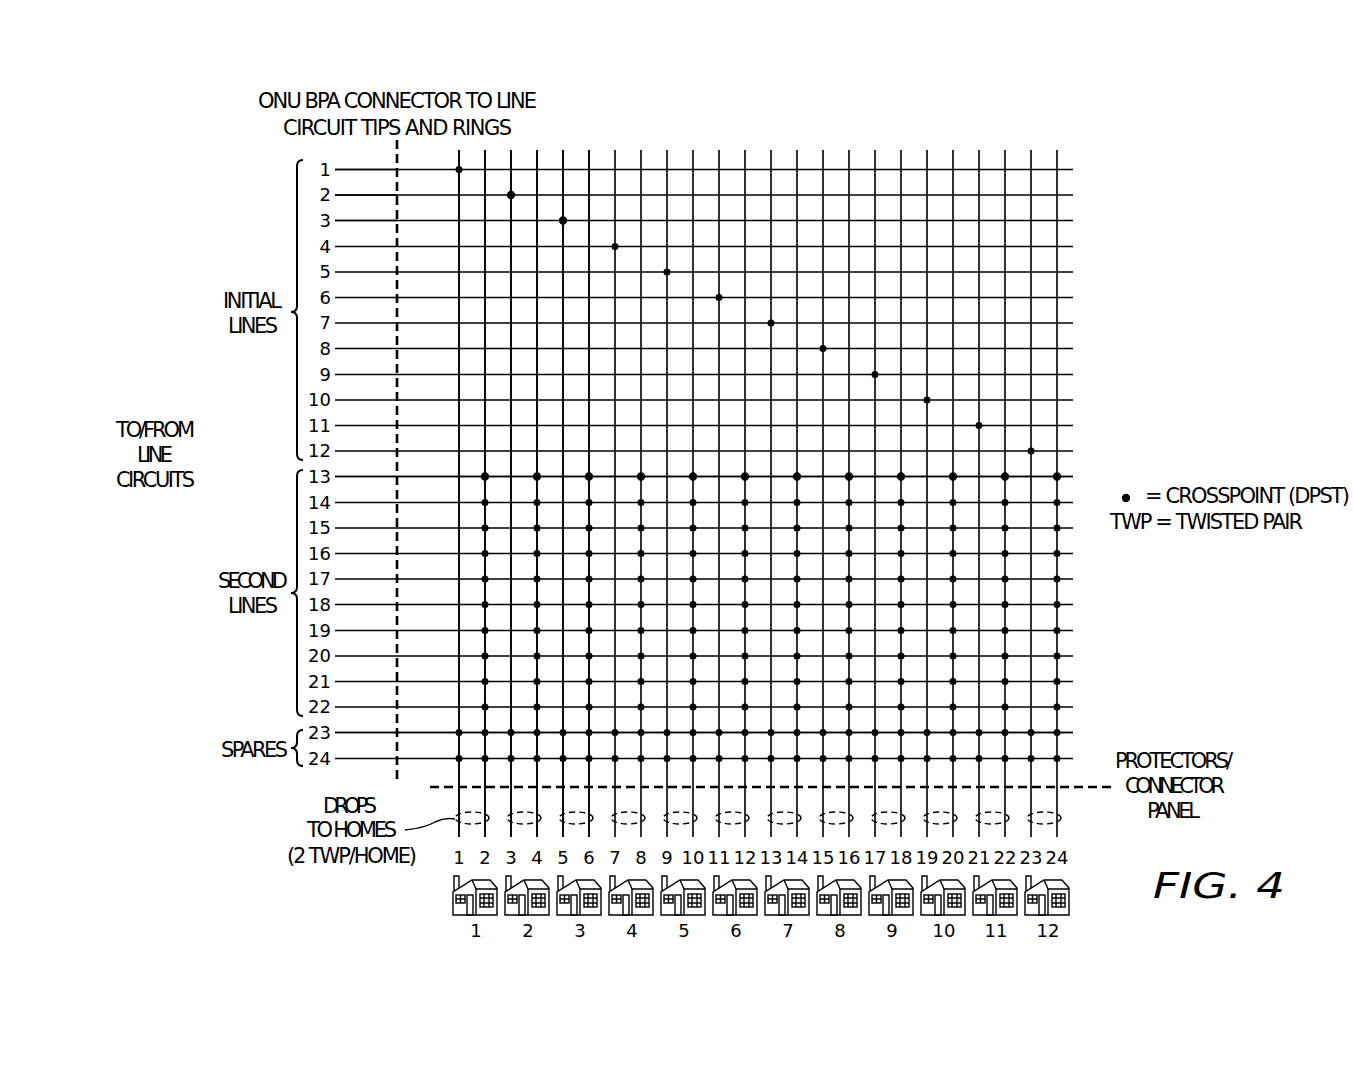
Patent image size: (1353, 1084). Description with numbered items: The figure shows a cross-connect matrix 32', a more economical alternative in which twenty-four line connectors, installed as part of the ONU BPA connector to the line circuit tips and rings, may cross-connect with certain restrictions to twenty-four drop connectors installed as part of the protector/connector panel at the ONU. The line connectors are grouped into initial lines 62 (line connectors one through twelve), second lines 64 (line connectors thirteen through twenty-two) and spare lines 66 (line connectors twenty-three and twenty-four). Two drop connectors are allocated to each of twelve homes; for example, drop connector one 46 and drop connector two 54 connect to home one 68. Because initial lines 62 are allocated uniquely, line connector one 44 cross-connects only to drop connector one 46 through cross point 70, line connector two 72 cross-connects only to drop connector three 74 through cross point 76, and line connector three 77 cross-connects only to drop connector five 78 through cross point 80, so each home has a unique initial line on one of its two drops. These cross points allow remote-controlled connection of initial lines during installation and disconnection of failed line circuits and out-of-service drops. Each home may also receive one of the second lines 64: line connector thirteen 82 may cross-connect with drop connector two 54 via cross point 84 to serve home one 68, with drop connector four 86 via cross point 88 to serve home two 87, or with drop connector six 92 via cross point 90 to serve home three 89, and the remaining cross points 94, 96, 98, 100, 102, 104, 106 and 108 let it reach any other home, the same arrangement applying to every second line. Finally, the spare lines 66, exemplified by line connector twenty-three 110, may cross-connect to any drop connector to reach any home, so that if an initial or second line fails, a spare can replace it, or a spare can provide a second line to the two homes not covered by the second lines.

The cross-connect matrix 32' is at (747, 479).
The line connector 1 44 is at (396, 166).
The drop connector 1 46 is at (457, 169).
The drop connector 2 54 is at (484, 448).
The initial lines 62 is at (216, 269).
The second lines 64 is at (195, 602).
The spare lines 66 is at (195, 752).
The home 1 68 is at (453, 908).
The cross point 70 is at (458, 183).
The line connector 2 72 is at (396, 193).
The drop connector 3 74 is at (511, 162).
The cross point 76 is at (511, 195).
The line connector 3 77 is at (396, 219).
The drop connector 5 78 is at (563, 162).
The cross point 80 is at (563, 221).
The line connector 13 82 is at (395, 477).
The cross point 84 is at (485, 476).
The drop connector 4 86 is at (536, 448).
The home 2 87 is at (533, 915).
The cross point 88 is at (537, 476).
The home 3 89 is at (583, 915).
The cross point 90 is at (589, 476).
The drop connector 6 92 is at (588, 448).
The cross point 94 is at (693, 476).
The cross point 96 is at (745, 476).
The cross point 98 is at (797, 476).
The cross point 100 is at (849, 476).
The cross point 102 is at (901, 476).
The cross point 104 is at (953, 476).
The cross point 106 is at (1005, 476).
The cross point 108 is at (1057, 476).
The line connector 23 110 is at (415, 735).